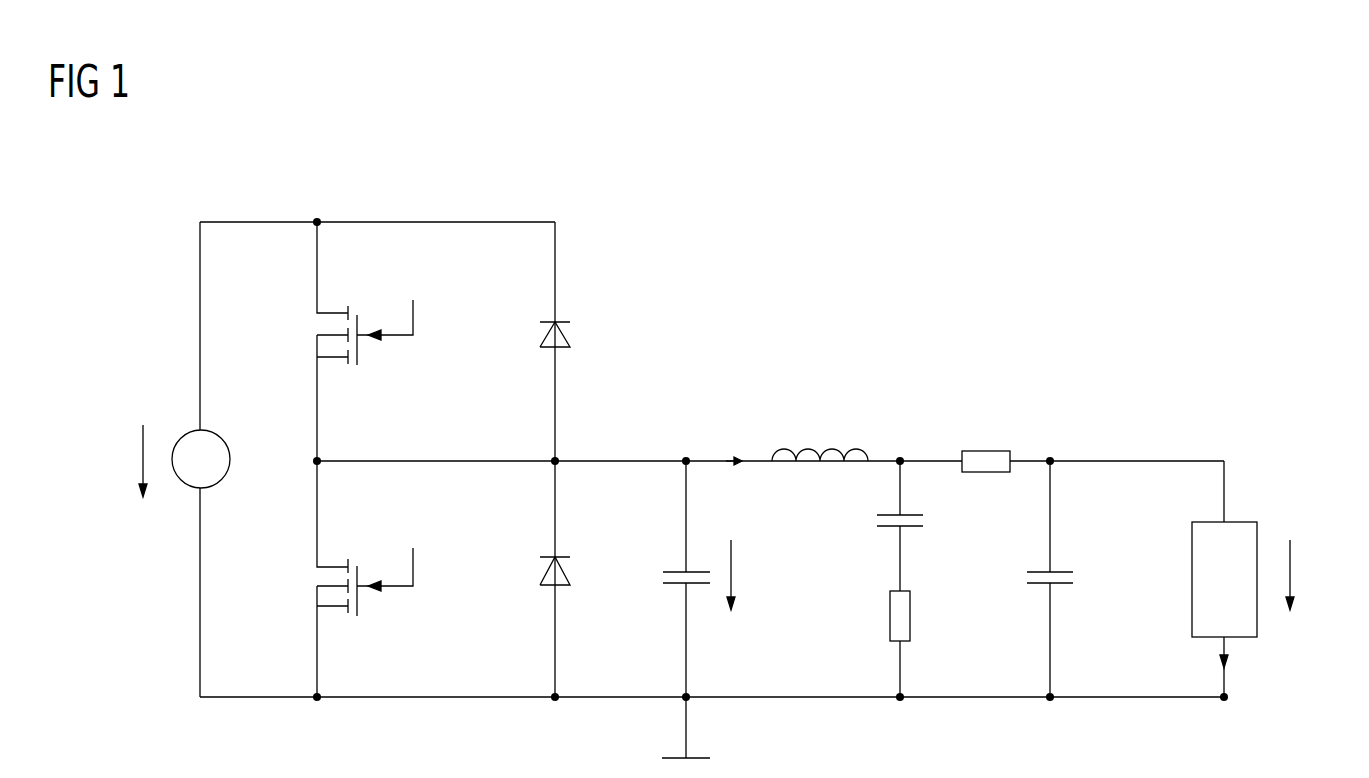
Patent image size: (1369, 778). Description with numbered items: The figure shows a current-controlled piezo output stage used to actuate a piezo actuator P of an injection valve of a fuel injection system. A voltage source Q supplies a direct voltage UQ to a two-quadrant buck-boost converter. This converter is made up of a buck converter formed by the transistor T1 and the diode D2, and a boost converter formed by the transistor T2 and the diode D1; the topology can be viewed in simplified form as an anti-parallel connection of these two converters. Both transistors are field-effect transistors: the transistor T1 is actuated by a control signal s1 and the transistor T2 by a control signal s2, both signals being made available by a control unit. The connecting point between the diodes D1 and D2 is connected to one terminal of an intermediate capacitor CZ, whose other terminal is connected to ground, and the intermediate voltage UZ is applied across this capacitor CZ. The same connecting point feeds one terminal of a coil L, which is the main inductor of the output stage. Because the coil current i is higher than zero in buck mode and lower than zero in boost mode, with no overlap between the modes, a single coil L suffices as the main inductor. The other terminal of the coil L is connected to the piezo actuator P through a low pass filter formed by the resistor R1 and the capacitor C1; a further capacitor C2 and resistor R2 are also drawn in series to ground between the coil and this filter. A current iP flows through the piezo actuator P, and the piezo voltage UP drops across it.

The voltage source Q is at (215, 459).
The direct voltage UQ is at (114, 461).
The transistor of the buck converter T1 is at (337, 341).
The transistor of the boost converter T2 is at (337, 579).
The control signal s1 is at (406, 273).
The control signal s2 is at (407, 522).
The diode of the boost converter D1 is at (529, 331).
The diode of the buck converter D2 is at (529, 571).
The intermediate capacitor CZ is at (662, 609).
The intermediate voltage UZ is at (760, 575).
The coil current i is at (734, 433).
The coil L is at (820, 426).
The second capacitor C2 is at (926, 526).
The second resistor R2 is at (927, 644).
The low pass filter resistor R1 is at (986, 432).
The low pass filter capacitor C1 is at (1072, 579).
The piezo actuator P is at (1210, 579).
The piezo voltage UP is at (1319, 573).
The piezo current iP is at (1243, 668).